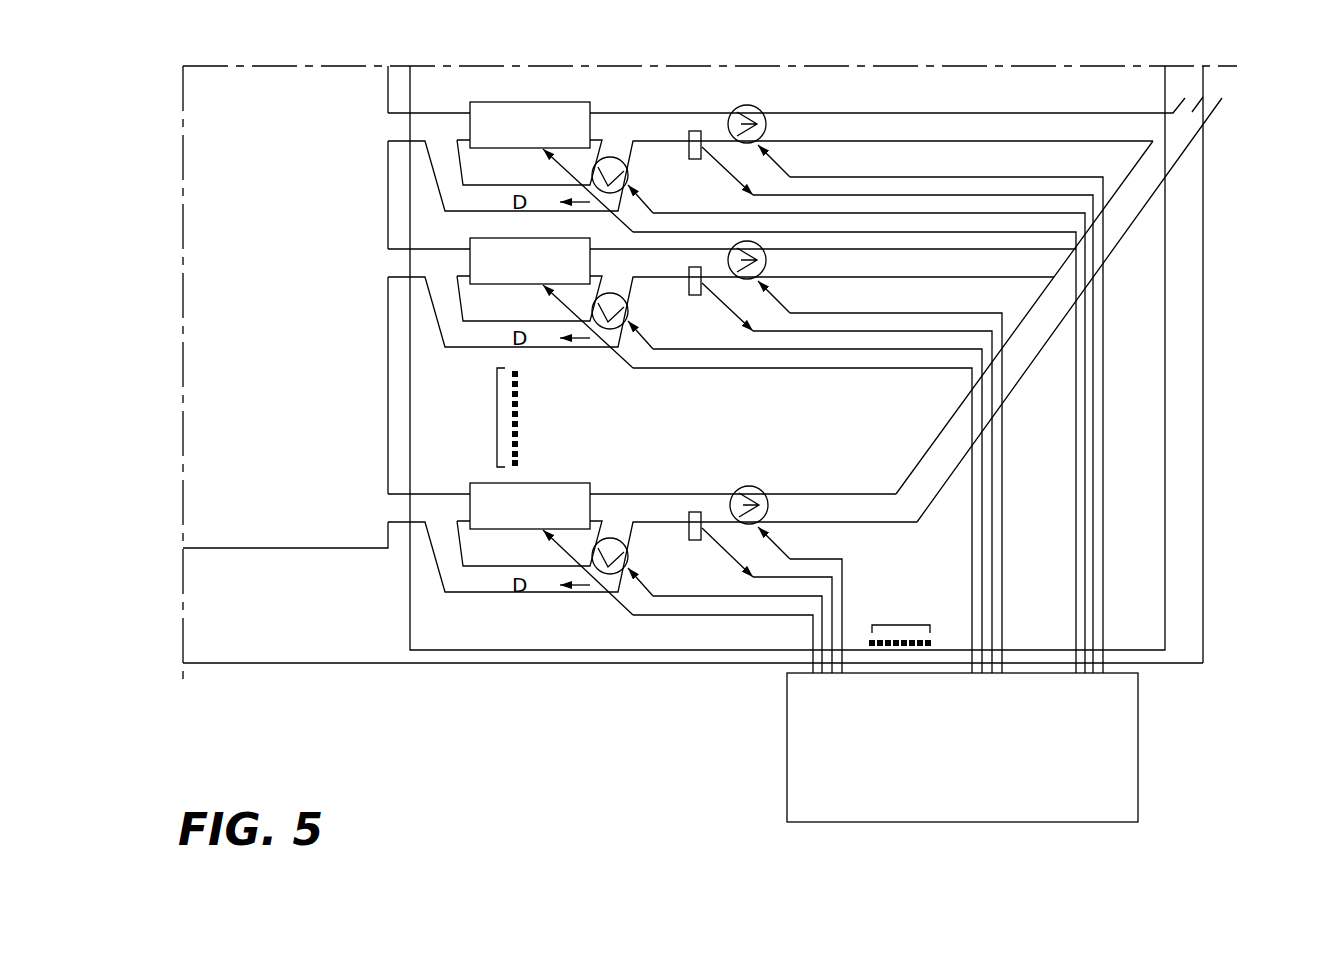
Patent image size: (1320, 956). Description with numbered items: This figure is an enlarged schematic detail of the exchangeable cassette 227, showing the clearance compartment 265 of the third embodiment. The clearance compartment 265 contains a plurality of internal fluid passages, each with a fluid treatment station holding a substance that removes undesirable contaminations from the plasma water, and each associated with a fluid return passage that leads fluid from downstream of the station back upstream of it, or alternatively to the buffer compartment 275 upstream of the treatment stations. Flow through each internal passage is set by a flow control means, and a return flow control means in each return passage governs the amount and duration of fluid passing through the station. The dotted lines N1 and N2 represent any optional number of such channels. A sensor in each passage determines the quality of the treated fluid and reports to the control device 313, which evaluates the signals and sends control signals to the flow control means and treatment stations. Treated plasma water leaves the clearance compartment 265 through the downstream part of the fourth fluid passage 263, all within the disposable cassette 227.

The buffer compartment 275 is at (225, 348).
The exchangeable cassette 227 is at (1212, 638).
The clearance compartment 265 is at (445, 648).
The fourth fluid passage 263 is at (1200, 93).
The control device 313 is at (988, 762).
The optional number of channels N1 is at (492, 408).
The optional number of channels N2 is at (898, 623).